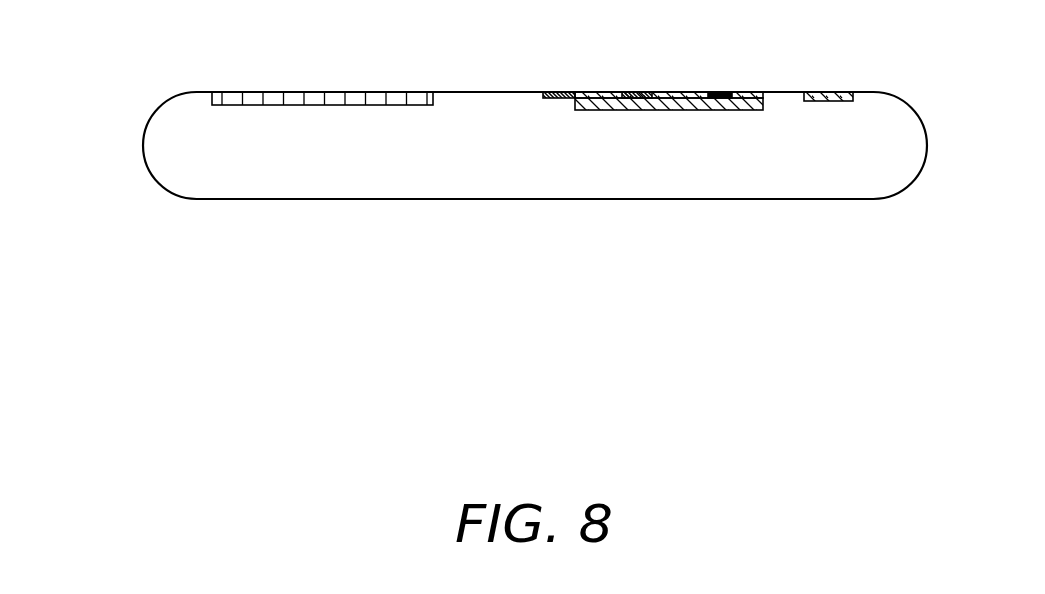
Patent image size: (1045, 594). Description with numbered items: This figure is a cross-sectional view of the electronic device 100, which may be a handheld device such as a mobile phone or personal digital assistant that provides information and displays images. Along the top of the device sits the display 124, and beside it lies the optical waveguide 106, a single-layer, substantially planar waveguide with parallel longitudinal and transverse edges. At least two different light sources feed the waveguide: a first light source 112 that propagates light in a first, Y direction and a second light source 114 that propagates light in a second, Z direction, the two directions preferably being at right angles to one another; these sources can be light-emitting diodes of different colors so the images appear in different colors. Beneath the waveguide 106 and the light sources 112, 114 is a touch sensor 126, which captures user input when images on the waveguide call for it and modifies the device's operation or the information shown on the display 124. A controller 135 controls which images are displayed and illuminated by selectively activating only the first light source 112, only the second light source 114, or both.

The electronic device 100 is at (150, 82).
The display 124 is at (267, 91).
The first light source 112 is at (555, 91).
The second light source 114 is at (635, 91).
The optical waveguide 106 is at (751, 92).
The touch sensor 126 is at (672, 112).
The controller 135 is at (840, 92).